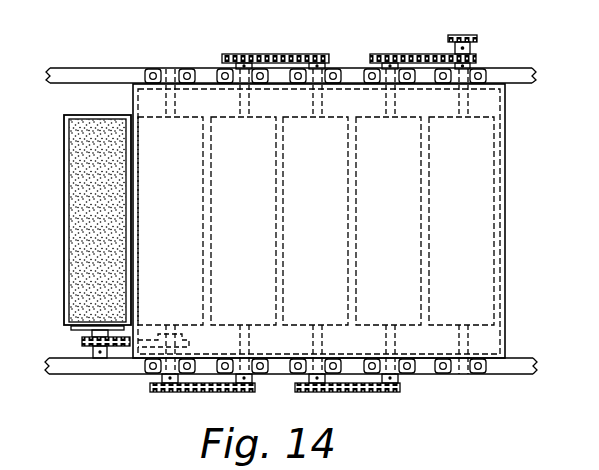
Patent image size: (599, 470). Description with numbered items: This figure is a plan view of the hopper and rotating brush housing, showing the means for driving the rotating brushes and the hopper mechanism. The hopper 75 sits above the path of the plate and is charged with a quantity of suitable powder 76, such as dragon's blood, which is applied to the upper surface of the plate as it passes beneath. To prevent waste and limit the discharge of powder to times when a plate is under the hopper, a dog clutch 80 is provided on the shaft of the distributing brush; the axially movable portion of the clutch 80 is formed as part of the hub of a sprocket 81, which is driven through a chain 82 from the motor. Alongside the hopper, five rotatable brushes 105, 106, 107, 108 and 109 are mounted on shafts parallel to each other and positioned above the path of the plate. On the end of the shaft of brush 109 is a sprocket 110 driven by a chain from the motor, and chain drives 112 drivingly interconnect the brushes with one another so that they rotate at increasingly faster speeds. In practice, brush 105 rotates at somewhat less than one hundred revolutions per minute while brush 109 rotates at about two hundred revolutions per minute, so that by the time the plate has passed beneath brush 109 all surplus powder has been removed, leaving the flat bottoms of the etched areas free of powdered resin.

The hopper 75 is at (64, 188).
The powder 76 is at (82, 211).
The dog clutch 80 is at (92, 333).
The sprocket 81 is at (90, 350).
The chain 82 is at (125, 350).
The rotatable brush 105 is at (180, 117).
The rotatable brush 106 is at (256, 117).
The rotatable brush 107 is at (329, 117).
The rotatable brush 108 is at (401, 117).
The rotatable brush 109 is at (483, 116).
The sprocket 110 is at (468, 36).
The chain drives 112 is at (272, 53).